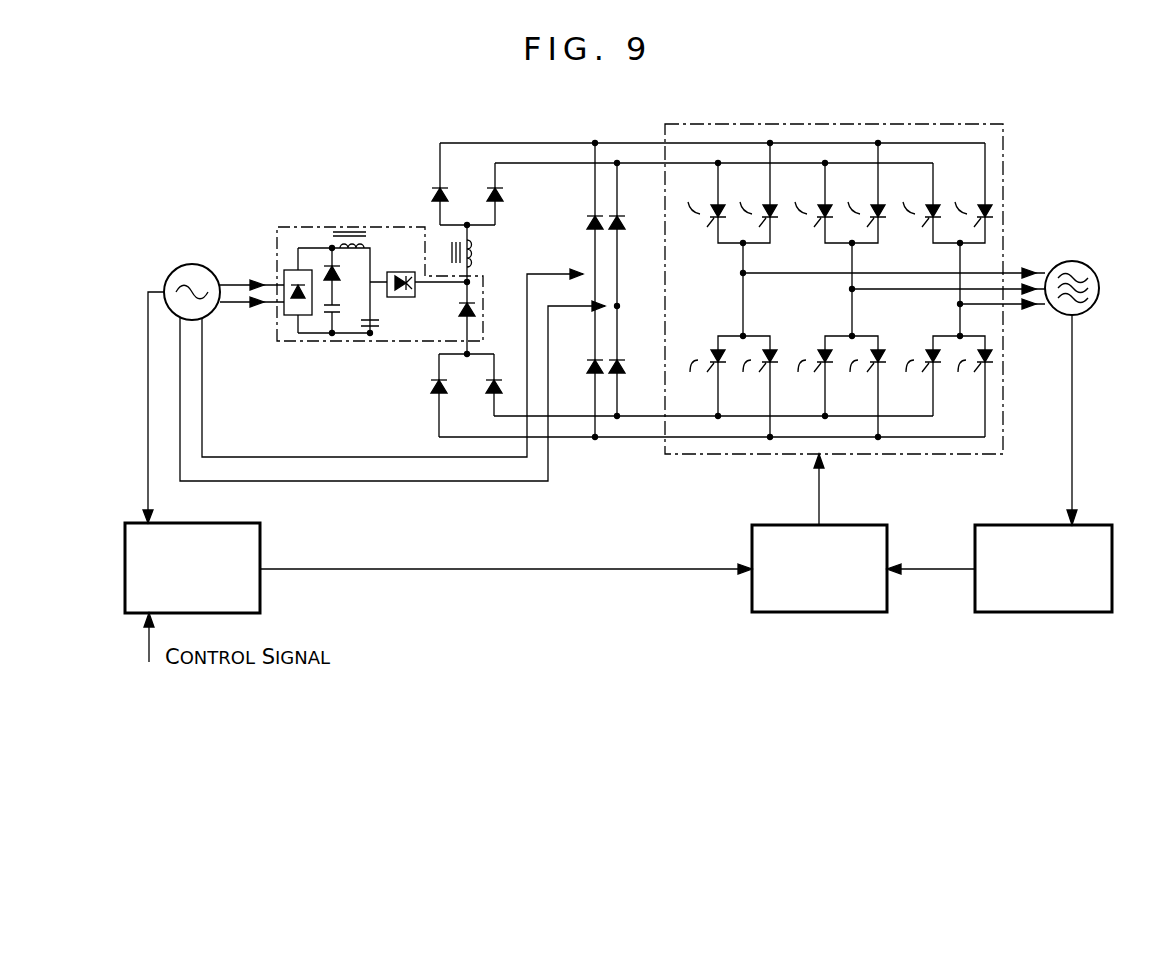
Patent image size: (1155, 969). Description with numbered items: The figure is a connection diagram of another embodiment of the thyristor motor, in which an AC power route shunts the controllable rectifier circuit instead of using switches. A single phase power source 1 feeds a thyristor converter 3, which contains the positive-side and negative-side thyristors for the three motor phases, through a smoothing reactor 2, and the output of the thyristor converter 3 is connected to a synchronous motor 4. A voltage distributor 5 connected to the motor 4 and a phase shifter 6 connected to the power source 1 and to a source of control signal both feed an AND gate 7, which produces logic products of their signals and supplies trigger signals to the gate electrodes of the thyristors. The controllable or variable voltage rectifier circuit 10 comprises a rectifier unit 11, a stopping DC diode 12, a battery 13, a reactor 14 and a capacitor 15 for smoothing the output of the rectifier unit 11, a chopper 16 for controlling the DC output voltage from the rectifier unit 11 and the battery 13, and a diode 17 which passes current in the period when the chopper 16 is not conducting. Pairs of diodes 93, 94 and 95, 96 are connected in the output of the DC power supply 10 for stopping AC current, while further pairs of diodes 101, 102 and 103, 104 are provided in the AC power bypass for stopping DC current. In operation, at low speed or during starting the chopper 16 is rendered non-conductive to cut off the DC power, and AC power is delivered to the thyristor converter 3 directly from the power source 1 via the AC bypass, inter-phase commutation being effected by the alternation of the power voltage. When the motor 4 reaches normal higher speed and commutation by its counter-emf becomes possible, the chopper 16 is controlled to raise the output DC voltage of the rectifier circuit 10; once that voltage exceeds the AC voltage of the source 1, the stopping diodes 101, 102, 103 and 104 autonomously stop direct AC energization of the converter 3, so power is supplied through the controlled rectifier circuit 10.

The single phase power source 1 is at (190, 262).
The smoothing reactor 2 is at (476, 250).
The thyristor converter 3 is at (800, 127).
The synchronous motor 4 is at (1064, 262).
The voltage distributor 5 is at (1016, 522).
The phase shifter 6 is at (186, 518).
The AND gate 7 is at (834, 524).
The controllable rectifier circuit 10 is at (277, 230).
The rectifier unit 11 is at (284, 318).
The stopping DC diode 12 is at (325, 266).
The battery 13 is at (327, 314).
The reactor 14 is at (348, 231).
The capacitor 15 is at (370, 332).
The chopper 16 is at (402, 272).
The diode 17 is at (476, 308).
The diode 93 is at (432, 191).
The diode 94 is at (504, 192).
The diode 95 is at (430, 388).
The diode 96 is at (490, 388).
The stopping diode 101 is at (586, 216).
The stopping diode 102 is at (586, 367).
The stopping diode 103 is at (626, 217).
The stopping diode 104 is at (626, 366).